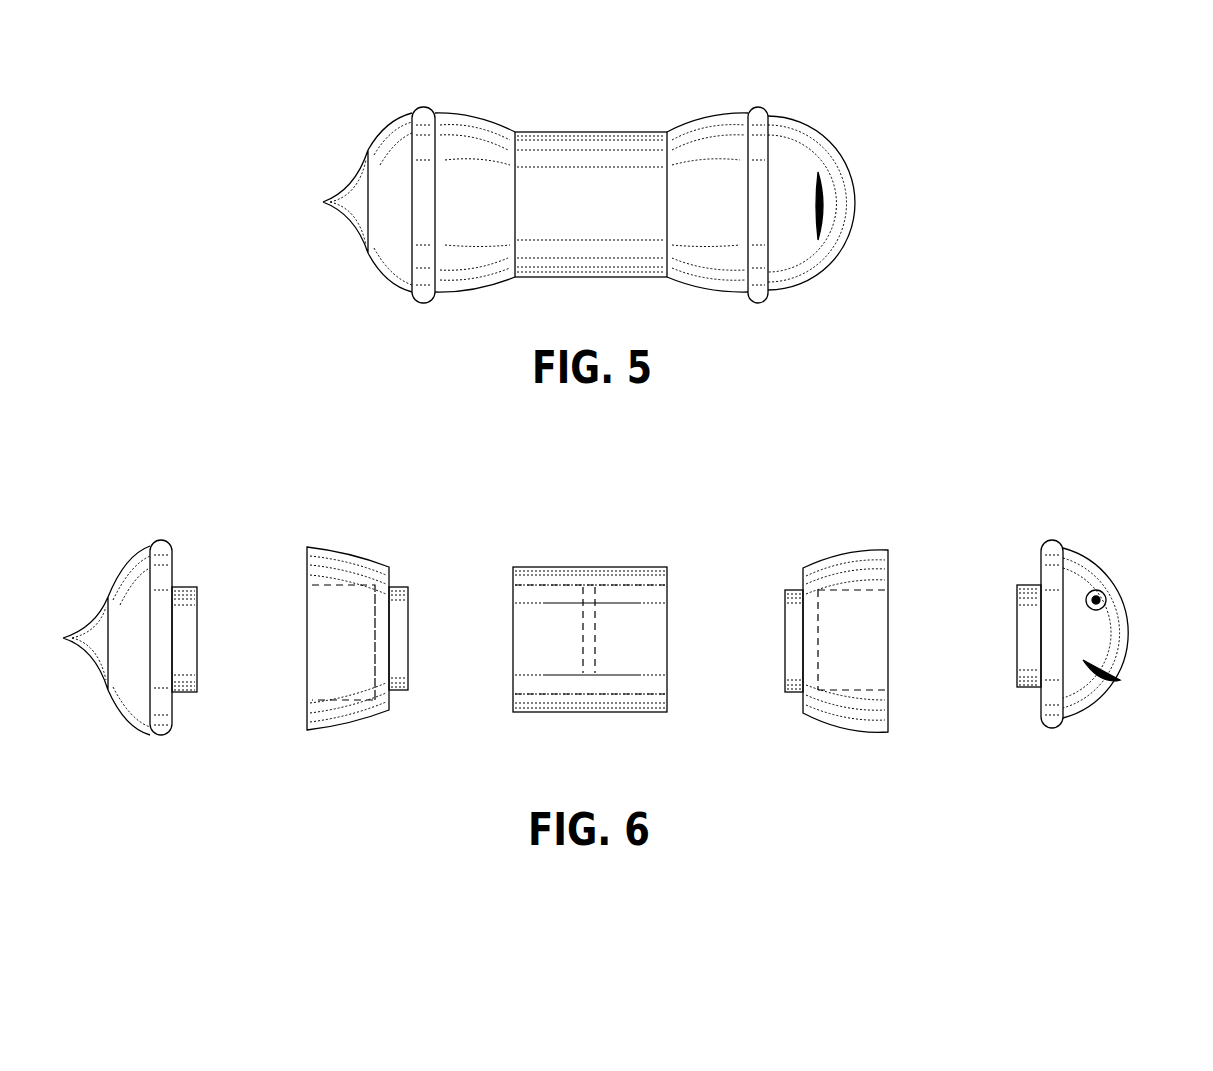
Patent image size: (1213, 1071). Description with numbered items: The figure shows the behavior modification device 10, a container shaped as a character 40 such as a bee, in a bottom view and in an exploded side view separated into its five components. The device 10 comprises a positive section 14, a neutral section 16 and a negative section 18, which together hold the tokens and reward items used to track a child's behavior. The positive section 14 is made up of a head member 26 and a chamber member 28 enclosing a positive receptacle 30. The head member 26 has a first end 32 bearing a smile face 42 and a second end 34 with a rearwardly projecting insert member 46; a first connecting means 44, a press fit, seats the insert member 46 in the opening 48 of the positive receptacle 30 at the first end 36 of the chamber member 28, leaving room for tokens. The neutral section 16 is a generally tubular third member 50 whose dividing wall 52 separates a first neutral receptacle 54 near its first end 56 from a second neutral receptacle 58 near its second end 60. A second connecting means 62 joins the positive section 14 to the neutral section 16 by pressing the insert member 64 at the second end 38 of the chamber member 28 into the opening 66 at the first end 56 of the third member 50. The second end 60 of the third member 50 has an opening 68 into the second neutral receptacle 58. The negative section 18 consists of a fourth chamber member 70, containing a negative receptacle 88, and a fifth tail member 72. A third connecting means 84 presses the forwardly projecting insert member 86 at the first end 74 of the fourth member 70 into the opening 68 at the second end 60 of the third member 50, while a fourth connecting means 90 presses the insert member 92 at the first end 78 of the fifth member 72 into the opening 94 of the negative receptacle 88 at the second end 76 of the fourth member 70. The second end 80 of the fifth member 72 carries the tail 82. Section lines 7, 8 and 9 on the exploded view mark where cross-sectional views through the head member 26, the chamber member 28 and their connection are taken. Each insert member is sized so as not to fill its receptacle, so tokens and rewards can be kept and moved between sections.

In FIG. 6, the section line 7- 7 is at (1004, 753).
In FIG. 6, the section line 8- 8 is at (896, 753).
In FIG. 6, the section line 9- 9 is at (782, 732).
In FIG. 5, the behavior modification device 10 is at (762, 75).
In FIG. 6, the behavior modification device 10 is at (1052, 462).
In FIG. 5, the positive section 14 is at (776, 318).
In FIG. 6, the positive section 14 is at (1062, 768).
In FIG. 5, the neutral section 16 is at (572, 124).
In FIG. 6, the neutral section 16 is at (572, 550).
In FIG. 5, the negative section 18 is at (405, 318).
In FIG. 6, the negative section 18 is at (342, 733).
In FIG. 5, the first or head member 26 is at (795, 160).
In FIG. 6, the first or head member 26 is at (1098, 582).
In FIG. 5, the second or chamber member 28 is at (697, 150).
In FIG. 6, the second or chamber member 28 is at (843, 575).
In FIG. 6, the positive receptacle 30 is at (862, 630).
In FIG. 6, the first end of first member 32 is at (1107, 540).
In FIG. 6, the second end of first member 34 is at (1020, 525).
In FIG. 6, the first end of second member 36 is at (895, 525).
In FIG. 6, the second end of second member 38 is at (793, 545).
In FIG. 5, the character 40 is at (421, 78).
In FIG. 5, the smile face 42 is at (850, 197).
In FIG. 6, the smile face 42 is at (1118, 625).
In FIG. 6, the first connecting means 44 is at (940, 580).
In FIG. 6, the insert member 46 is at (1030, 640).
In FIG. 6, the opening of positive receptacle 48 is at (888, 655).
In FIG. 5, the third member 50 is at (537, 165).
In FIG. 6, the third member 50 is at (540, 580).
In FIG. 6, the dividing wall 52 is at (588, 670).
In FIG. 6, the first neutral receptacle 54 is at (640, 640).
In FIG. 6, the first end of third member 56 is at (668, 530).
In FIG. 6, the second neutral receptacle 58 is at (530, 655).
In FIG. 6, the second end of third member 60 is at (512, 560).
In FIG. 6, the second connecting means 62 is at (722, 715).
In FIG. 6, the insert member 64 is at (793, 625).
In FIG. 6, the opening 66 is at (665, 655).
In FIG. 6, the opening 68 is at (513, 638).
In FIG. 5, the fourth or chamber member 70 is at (455, 148).
In FIG. 6, the fourth or chamber member 70 is at (355, 570).
In FIG. 5, the fifth or tail member 72 is at (392, 170).
In FIG. 6, the fifth or tail member 72 is at (138, 590).
In FIG. 6, the first end of fourth member 74 is at (428, 565).
In FIG. 6, the second end of fourth member 76 is at (306, 540).
In FIG. 6, the first end of fifth member 78 is at (197, 545).
In FIG. 6, the second end of fifth member 80 is at (68, 600).
In FIG. 5, the tail 82 is at (344, 228).
In FIG. 6, the tail 82 is at (90, 648).
In FIG. 6, the third connecting means 84 is at (436, 690).
In FIG. 6, the insert member 86 is at (400, 620).
In FIG. 6, the negative receptacle 88 is at (320, 615).
In FIG. 6, the fourth connecting means 90 is at (260, 560).
In FIG. 6, the insert member 92 is at (185, 640).
In FIG. 6, the opening of negative receptacle 94 is at (305, 650).